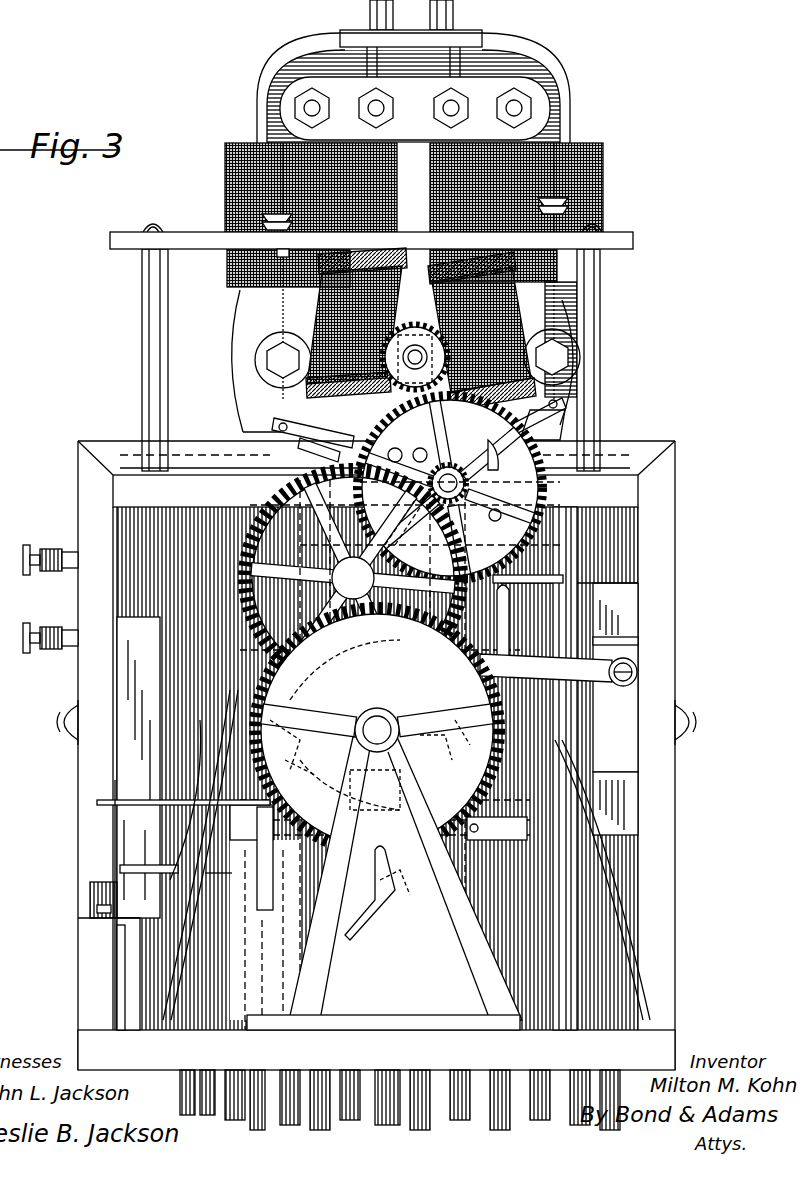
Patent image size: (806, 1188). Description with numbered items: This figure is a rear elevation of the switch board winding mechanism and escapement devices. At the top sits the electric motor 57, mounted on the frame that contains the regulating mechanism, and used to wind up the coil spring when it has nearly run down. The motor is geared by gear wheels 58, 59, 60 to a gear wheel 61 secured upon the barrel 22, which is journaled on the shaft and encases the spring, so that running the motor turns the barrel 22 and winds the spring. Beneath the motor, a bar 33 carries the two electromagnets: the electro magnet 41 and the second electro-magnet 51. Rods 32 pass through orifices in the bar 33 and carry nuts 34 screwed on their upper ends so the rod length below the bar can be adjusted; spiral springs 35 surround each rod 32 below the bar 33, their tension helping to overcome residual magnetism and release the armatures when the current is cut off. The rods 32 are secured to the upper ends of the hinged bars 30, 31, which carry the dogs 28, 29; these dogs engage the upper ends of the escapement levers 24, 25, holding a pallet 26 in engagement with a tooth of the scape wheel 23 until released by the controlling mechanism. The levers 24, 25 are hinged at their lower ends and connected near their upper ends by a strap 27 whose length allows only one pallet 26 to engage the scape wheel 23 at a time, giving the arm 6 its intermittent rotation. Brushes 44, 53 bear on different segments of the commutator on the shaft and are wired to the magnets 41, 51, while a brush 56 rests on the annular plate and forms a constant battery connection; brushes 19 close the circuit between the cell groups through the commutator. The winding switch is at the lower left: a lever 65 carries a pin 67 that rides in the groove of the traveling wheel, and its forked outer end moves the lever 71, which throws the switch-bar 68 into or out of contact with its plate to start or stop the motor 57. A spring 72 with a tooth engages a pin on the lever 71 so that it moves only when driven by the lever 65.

The electric motor 57 is at (413, 71).
The rods 32 is at (273, 193).
The bar 33 is at (407, 240).
The nuts 34 is at (267, 230).
The spiral springs 35 is at (275, 322).
The second electro-magnet 51 is at (356, 317).
The electro magnet 41 is at (482, 323).
The gear wheel 58 is at (415, 357).
The bar 31 is at (295, 437).
The dog 29 is at (335, 442).
The bar 30 is at (518, 427).
The dog 28 is at (450, 488).
The lever 24 is at (467, 616).
The gear wheel 59 is at (476, 483).
The gear wheel 60 is at (466, 530).
The strap 27 is at (405, 522).
The brush 44 is at (528, 617).
The brush 56 is at (546, 668).
The second brush 53 is at (553, 687).
The gear wheel 61 is at (388, 814).
The lever 25 is at (285, 745).
The pallet 26 is at (300, 760).
The scape wheel 23 is at (436, 747).
The barrel 22 is at (464, 732).
The pin 67 is at (376, 790).
The brushes 19 is at (352, 886).
The arm 6 is at (265, 858).
The lever 65 is at (152, 800).
The lever 71 is at (115, 833).
The spring 72 is at (103, 882).
The switch-bar 68 is at (117, 951).